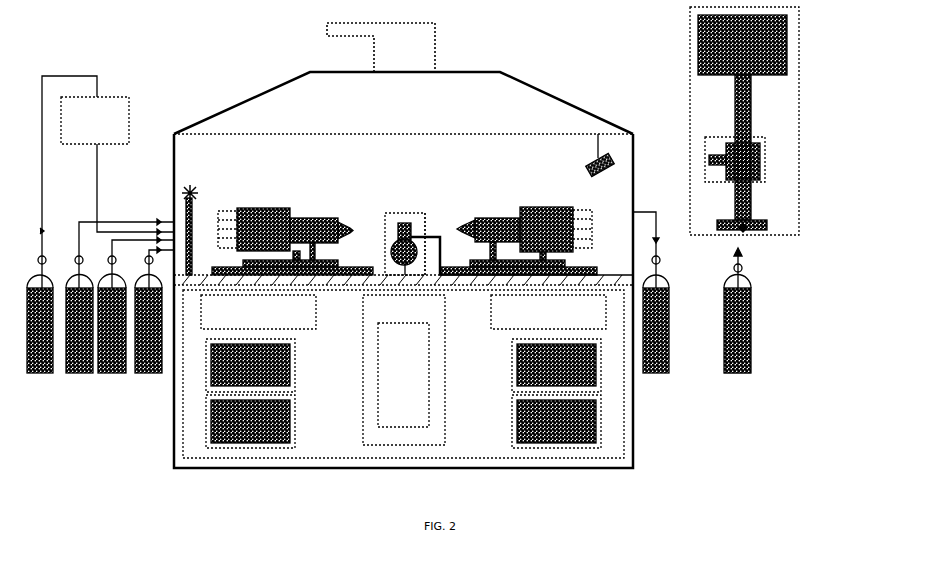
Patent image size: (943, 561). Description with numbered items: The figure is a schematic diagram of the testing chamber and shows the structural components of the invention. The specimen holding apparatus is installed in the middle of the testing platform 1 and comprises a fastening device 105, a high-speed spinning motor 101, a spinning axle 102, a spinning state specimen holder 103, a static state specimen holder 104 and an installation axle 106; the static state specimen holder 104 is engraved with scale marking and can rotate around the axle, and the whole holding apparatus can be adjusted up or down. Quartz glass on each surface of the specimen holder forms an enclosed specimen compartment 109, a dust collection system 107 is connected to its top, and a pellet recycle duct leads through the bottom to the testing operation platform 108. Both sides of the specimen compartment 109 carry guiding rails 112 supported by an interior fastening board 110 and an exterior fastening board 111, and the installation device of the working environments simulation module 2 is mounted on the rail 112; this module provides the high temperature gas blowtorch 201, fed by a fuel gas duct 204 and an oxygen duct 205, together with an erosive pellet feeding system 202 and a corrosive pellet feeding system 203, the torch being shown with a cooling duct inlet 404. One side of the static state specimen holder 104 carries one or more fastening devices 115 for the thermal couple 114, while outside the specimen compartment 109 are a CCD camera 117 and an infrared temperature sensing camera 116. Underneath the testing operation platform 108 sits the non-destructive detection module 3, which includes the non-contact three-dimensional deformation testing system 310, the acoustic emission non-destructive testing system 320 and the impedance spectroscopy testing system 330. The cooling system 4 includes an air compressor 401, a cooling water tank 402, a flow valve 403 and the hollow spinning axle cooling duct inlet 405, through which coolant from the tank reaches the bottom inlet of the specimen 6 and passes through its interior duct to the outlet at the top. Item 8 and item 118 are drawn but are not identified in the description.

The testing platform 1 is at (241, 157).
The working environments simulation module 2 is at (74, 70).
The non-destructive detection module 3 is at (183, 365).
The cooling system 4 is at (759, 362).
The specimen 6 is at (705, 157).
The workpiece holder 8 is at (398, 235).
The high speed motor 101 is at (787, 33).
The spinning axle 102 is at (752, 118).
The spinning state specimen holder 103 is at (760, 163).
The static state specimen holder 104 is at (397, 235).
The fastening device 105 is at (396, 250).
The installation axle 106 is at (413, 213).
The dust collection system 107 is at (435, 48).
The testing operation platform 108 is at (605, 268).
The specimen compartment 109 is at (767, 143).
The interior fastening board 110 is at (315, 258).
The exterior fastening board 111 is at (257, 262).
The guiding rail 112 is at (583, 267).
The thermal couple 114 is at (417, 235).
The fastening device for thermal couple 115 is at (565, 262).
The infrared temperature sensing camera 116 is at (605, 155).
The CCD camera 117 is at (190, 192).
The connecting arm 118 is at (430, 237).
The high temperature gas blowtorch 201 is at (307, 213).
The erosive pellet feeding system 202 is at (97, 87).
The corrosive pellet feeding system 203 is at (163, 220).
The fuel gas duct 204 is at (90, 221).
The oxygen duct 205 is at (133, 230).
The non-contact 3-D deformation testing system 310 is at (213, 375).
The acoustic emission non-destructive testing system 320 is at (605, 368).
The impedance spectroscopy testing system 330 is at (608, 410).
The air compressor 401 is at (751, 307).
The cooling water tank 402 is at (669, 307).
The flow valve 403 is at (738, 255).
The cooling duct inlet 404 is at (585, 210).
The hollow spinning axle cooling duct inlet 405 is at (742, 230).